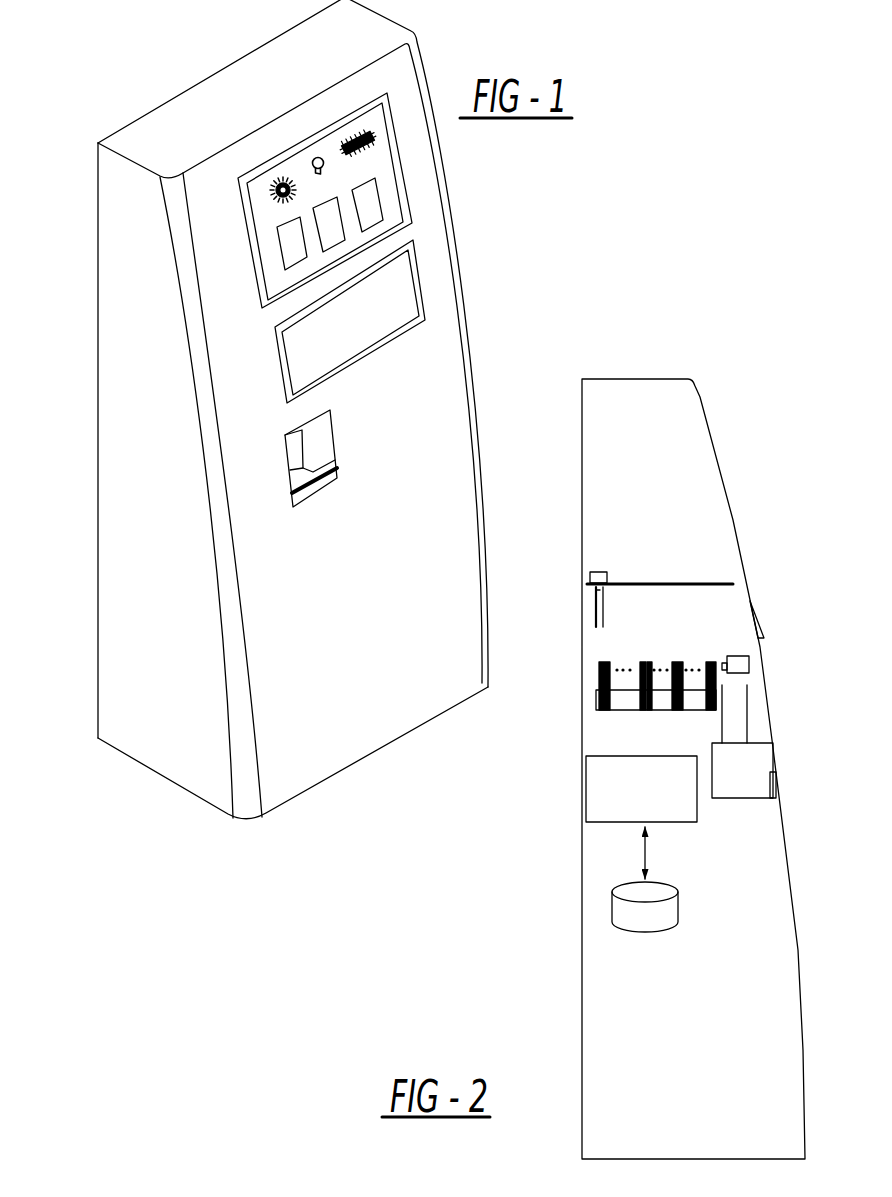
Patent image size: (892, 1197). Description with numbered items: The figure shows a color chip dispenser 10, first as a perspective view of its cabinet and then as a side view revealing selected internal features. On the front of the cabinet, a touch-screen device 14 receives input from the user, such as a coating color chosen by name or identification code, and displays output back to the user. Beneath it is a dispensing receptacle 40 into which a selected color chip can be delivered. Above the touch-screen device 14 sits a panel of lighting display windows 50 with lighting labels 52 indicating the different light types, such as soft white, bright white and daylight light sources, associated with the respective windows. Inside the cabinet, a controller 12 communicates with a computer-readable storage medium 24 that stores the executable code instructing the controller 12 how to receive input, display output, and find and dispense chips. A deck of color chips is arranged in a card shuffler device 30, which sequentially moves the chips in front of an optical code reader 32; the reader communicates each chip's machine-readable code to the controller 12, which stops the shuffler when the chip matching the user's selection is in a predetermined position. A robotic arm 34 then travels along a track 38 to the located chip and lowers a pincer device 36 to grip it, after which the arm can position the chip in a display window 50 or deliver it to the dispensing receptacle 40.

In FIG. 1, the color chip dispenser 10 is at (157, 47).
In FIG. 2, the color chip dispenser 10 is at (672, 348).
In FIG. 2, the controller 12 is at (605, 823).
In FIG. 1, the touch-screen device 14 is at (391, 291).
In FIG. 2, the touch-screen device 14 is at (760, 610).
In FIG. 2, the computer-readable storage medium 24 is at (612, 908).
In FIG. 2, the card shuffler device 30 is at (592, 672).
In FIG. 2, the optical code reader 32 is at (749, 664).
In FIG. 2, the robotic arm 34 is at (589, 574).
In FIG. 2, the pincer device 36 is at (594, 605).
In FIG. 2, the track 38 is at (684, 583).
In FIG. 1, the dispensing receptacle 40 is at (315, 447).
In FIG. 1, the display windows 50 is at (273, 255).
In FIG. 1, the lighting labels 52 is at (265, 203).